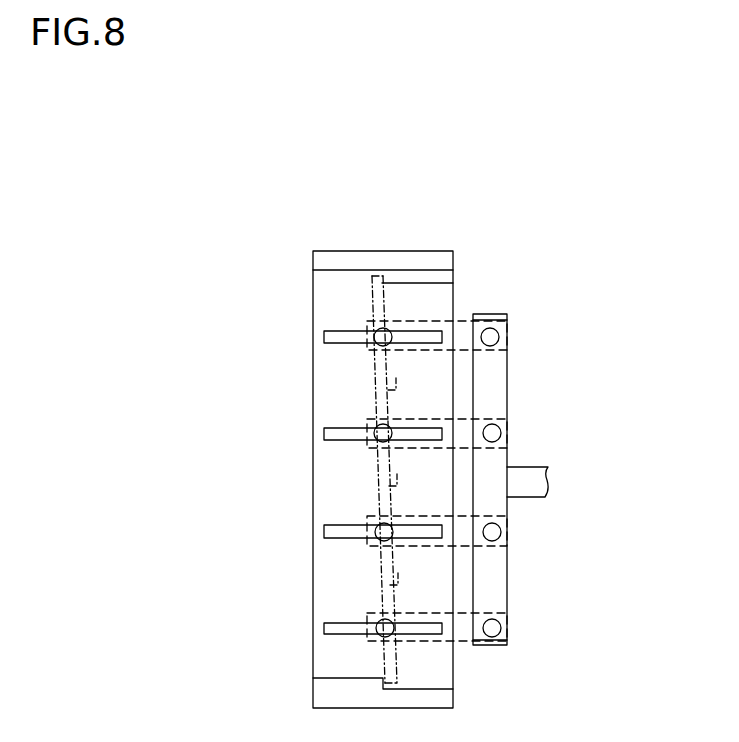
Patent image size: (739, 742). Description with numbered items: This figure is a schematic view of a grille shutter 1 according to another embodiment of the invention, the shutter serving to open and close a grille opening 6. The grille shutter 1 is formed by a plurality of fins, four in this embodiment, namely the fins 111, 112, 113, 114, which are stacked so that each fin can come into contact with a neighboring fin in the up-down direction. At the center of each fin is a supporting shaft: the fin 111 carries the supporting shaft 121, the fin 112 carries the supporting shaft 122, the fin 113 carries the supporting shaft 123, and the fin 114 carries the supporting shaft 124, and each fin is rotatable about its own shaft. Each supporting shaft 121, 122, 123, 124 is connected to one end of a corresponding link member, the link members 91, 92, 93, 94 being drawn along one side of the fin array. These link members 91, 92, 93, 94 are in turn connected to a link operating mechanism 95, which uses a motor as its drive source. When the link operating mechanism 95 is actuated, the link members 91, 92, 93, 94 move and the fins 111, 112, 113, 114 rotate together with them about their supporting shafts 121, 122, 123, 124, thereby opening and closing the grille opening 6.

The grille shutter 1 is at (507, 249).
The grille opening 6 is at (350, 288).
The link member 91 is at (510, 328).
The link member 92 is at (508, 426).
The link member 93 is at (508, 535).
The link member 94 is at (508, 635).
The link operating mechanism 95 is at (528, 390).
The fin 111 is at (340, 334).
The fin 112 is at (338, 431).
The fin 113 is at (338, 529).
The fin 114 is at (345, 625).
The supporting shaft 121 is at (382, 340).
The supporting shaft 122 is at (377, 440).
The supporting shaft 123 is at (377, 541).
The supporting shaft 124 is at (379, 636).